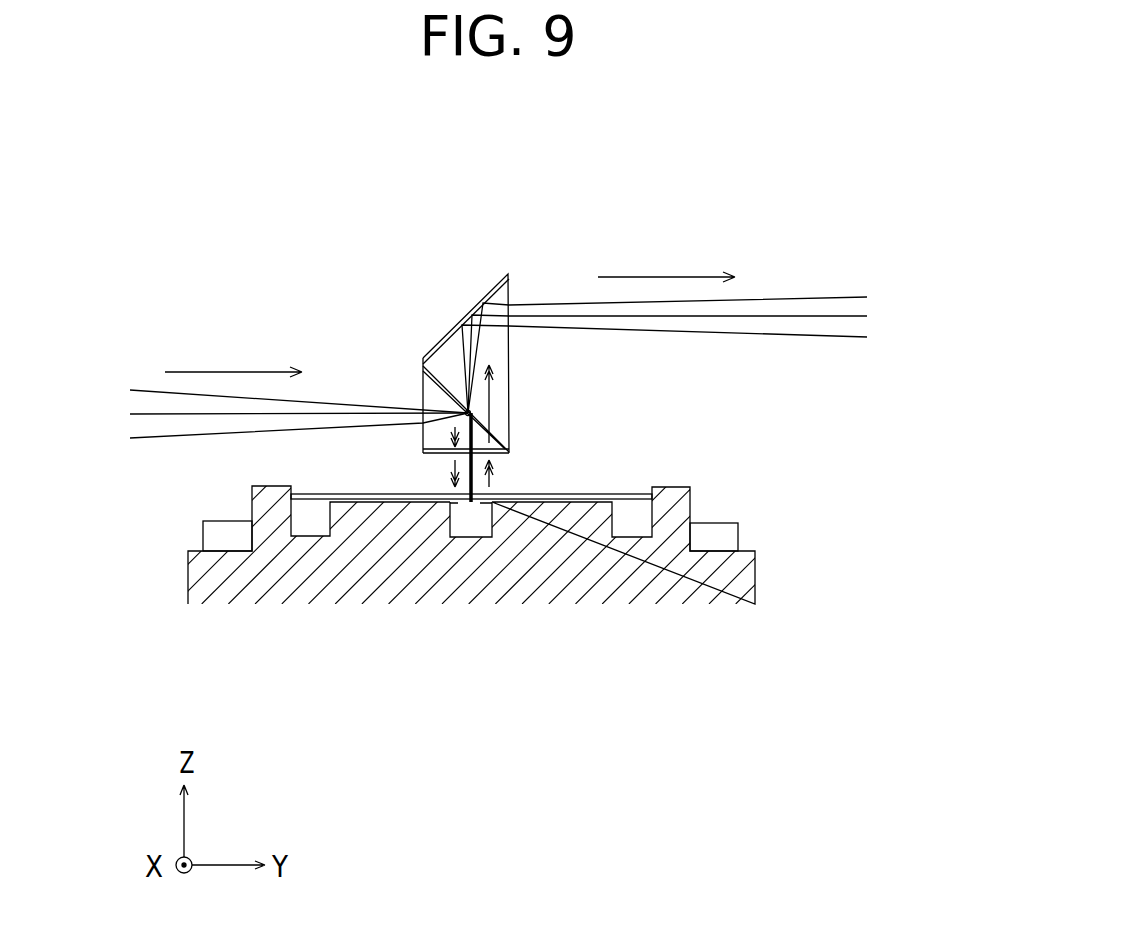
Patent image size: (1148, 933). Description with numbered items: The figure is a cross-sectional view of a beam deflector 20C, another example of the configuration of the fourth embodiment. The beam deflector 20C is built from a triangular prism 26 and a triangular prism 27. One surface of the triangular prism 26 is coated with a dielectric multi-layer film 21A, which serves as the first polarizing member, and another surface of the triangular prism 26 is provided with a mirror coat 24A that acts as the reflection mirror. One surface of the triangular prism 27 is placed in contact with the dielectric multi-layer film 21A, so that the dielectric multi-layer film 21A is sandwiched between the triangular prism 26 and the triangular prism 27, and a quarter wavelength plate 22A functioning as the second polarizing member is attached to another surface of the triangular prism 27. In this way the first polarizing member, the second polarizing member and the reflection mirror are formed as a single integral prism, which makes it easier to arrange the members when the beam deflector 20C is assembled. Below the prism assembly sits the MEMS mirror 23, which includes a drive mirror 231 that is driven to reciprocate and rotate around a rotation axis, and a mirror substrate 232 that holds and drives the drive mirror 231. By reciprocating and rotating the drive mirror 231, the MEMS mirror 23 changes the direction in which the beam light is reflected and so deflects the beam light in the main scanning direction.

The beam deflector 20C is at (575, 212).
The dielectric multi-layer film 21A is at (440, 381).
The quarter wavelength plate 22A is at (508, 452).
The MEMS mirror 23 is at (273, 668).
The drive mirror 231 is at (456, 537).
The mirror substrate 232 is at (297, 605).
The mirror coat 24A is at (493, 287).
The triangular prism 26 is at (505, 391).
The triangular prism 27 is at (433, 437).